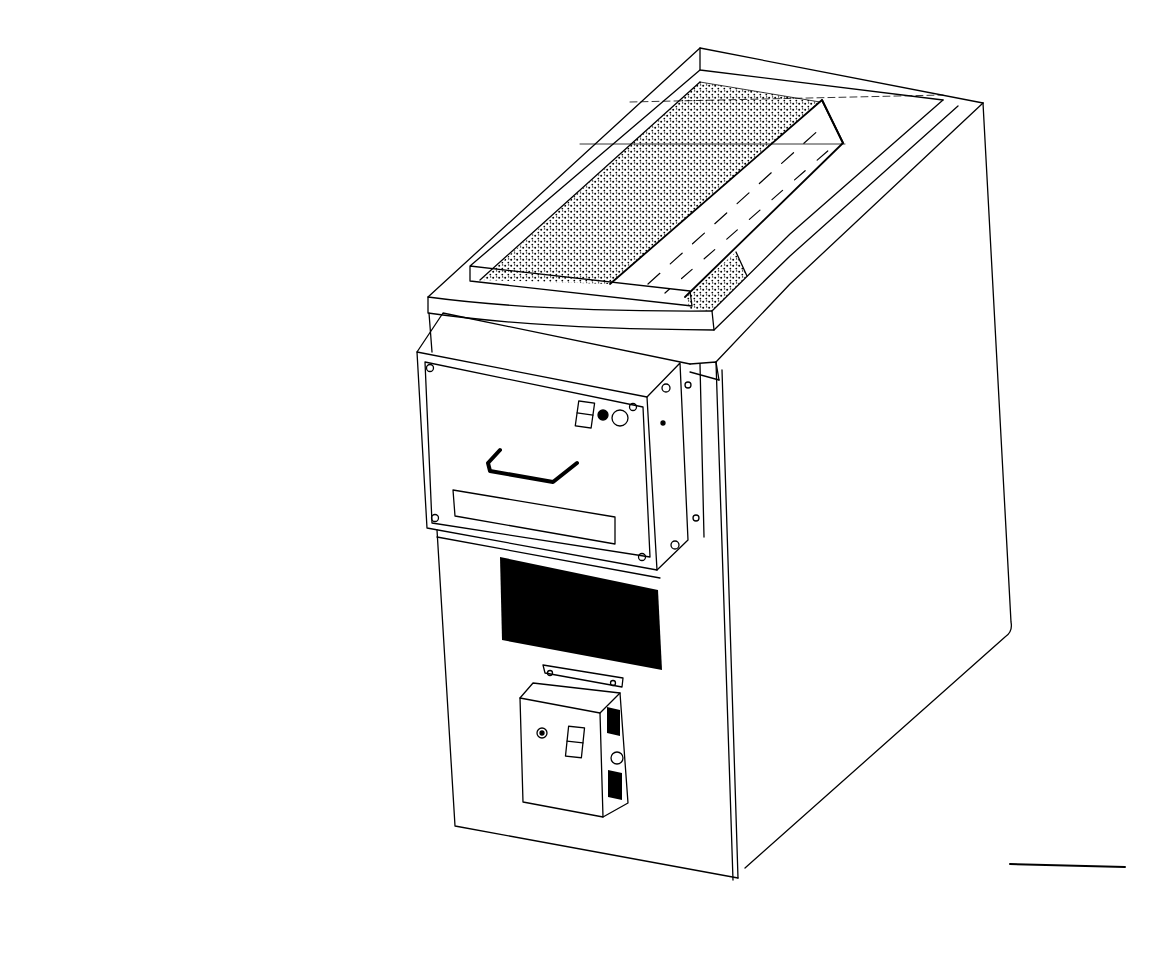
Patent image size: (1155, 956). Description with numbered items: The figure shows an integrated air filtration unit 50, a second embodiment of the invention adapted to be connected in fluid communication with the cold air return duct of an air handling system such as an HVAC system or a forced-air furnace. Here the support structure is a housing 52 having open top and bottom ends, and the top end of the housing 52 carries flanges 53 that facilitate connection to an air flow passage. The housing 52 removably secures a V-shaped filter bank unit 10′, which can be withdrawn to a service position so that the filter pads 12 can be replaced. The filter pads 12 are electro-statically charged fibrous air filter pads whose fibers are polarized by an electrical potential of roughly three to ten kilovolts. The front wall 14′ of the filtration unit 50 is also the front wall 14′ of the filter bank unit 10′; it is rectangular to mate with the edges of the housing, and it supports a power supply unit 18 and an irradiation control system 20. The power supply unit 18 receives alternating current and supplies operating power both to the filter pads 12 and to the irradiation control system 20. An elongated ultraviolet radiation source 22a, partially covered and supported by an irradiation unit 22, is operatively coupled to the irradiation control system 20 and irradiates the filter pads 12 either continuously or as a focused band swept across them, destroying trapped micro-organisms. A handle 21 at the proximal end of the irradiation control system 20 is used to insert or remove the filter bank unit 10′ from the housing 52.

The integrated air filtration unit 50 is at (356, 222).
The V-shaped filter bank unit 10′ is at (460, 698).
The front wall 14′ is at (457, 612).
The housing 52 is at (960, 548).
The flanges 53 is at (931, 118).
The filter pads 12 is at (597, 203).
The irradiation unit 22 is at (813, 127).
The elongated ultraviolet radiation source 22a is at (797, 172).
The irradiation control system 20 is at (445, 443).
The handle 21 is at (547, 458).
The power supply unit 18 is at (545, 767).